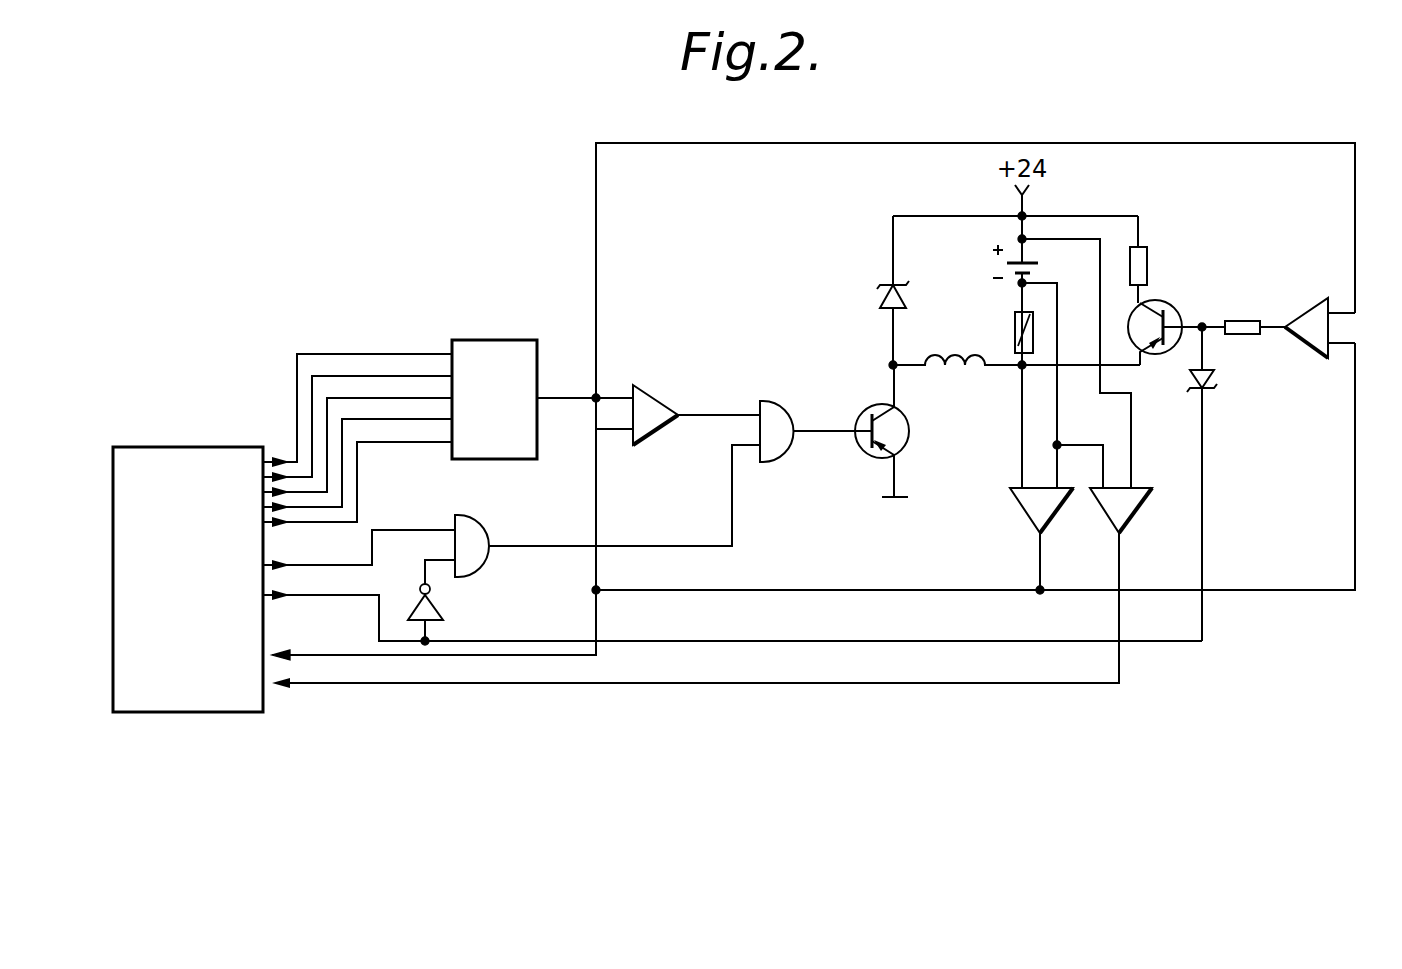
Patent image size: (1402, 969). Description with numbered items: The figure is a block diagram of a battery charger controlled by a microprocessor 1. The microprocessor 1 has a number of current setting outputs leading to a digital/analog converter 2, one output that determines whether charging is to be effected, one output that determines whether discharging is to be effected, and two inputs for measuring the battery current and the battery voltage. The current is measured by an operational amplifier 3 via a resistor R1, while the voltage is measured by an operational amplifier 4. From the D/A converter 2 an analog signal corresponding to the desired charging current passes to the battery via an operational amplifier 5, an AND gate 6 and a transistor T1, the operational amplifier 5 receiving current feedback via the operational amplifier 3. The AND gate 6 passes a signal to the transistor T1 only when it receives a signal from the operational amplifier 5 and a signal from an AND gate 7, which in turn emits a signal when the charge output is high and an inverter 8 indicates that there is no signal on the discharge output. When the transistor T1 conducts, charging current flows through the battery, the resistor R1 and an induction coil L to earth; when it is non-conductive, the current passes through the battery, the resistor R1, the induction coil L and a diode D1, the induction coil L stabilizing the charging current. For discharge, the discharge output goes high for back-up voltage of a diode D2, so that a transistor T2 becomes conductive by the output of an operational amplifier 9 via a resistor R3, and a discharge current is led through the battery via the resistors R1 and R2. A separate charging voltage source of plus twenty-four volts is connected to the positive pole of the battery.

The microprocessor 1 is at (177, 690).
The digital/analog (D/A) converter 2 is at (497, 352).
The operational amplifier 3 is at (1030, 513).
The operational amplifier 4 is at (1122, 512).
The operational amplifier 5 is at (640, 405).
The AND gate 6 is at (775, 420).
The AND gate 7 is at (467, 536).
The inverter 8 is at (433, 603).
The operational amplifier 9 is at (1312, 338).
The transistor T1 is at (897, 437).
The transistor T2 is at (1172, 311).
The resistor R1 is at (1017, 338).
The resistor R2 is at (1135, 276).
The resistor R3 is at (1237, 330).
The diode D1 is at (880, 300).
The diode D2 is at (1213, 381).
The induction coil L is at (955, 372).